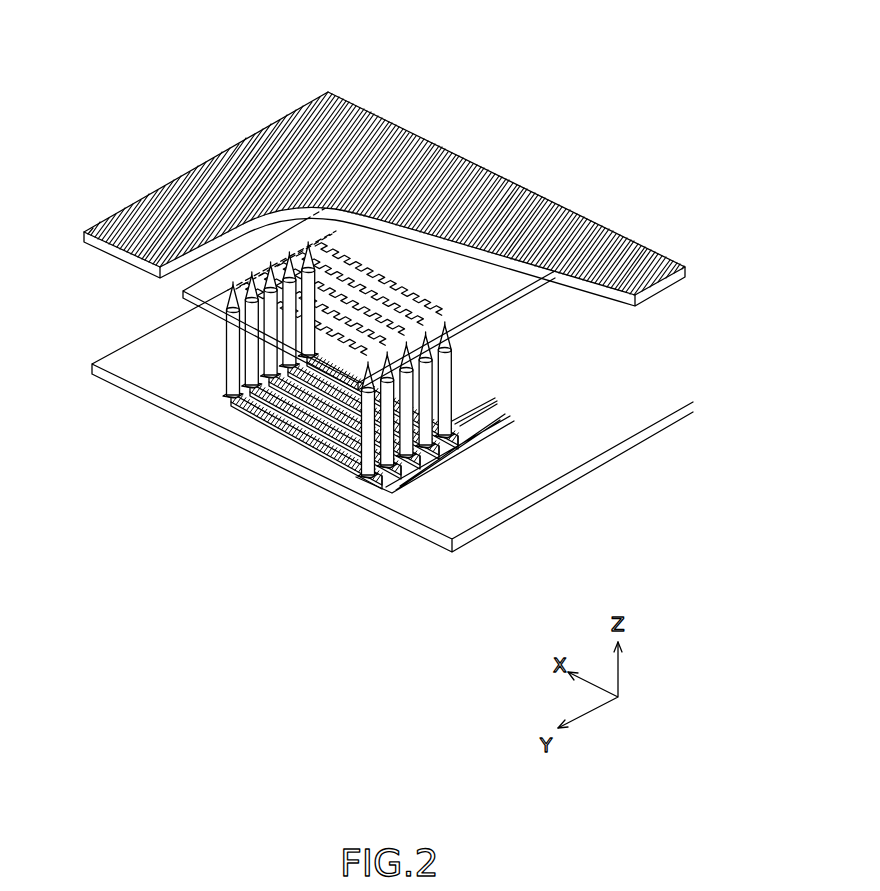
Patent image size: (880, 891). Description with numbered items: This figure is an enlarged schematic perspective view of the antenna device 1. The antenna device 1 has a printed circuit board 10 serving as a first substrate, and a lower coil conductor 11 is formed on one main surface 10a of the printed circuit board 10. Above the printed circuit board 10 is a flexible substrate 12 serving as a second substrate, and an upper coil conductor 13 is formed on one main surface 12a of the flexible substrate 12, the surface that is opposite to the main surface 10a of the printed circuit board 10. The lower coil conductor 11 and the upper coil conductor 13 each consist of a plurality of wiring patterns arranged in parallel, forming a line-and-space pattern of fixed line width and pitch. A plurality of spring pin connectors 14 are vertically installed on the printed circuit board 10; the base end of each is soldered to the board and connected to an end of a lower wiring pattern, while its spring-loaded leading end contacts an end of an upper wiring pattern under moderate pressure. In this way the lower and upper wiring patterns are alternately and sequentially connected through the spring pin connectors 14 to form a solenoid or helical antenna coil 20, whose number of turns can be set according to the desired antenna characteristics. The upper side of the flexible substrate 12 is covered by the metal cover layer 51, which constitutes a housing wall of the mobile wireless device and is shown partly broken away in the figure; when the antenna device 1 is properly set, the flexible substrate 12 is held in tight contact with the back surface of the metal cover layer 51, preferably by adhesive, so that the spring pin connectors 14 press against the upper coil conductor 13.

The antenna device 1 is at (586, 107).
The printed circuit board 10 is at (613, 452).
The one main surface 10a is at (505, 490).
The lower coil conductor 11 is at (307, 433).
The flexible substrate 12 is at (516, 294).
The one main surface 12a is at (479, 312).
The upper coil conductor 13 is at (423, 289).
The spring pin connectors 14 is at (224, 346).
The antenna coil 20 is at (374, 340).
The metal cover layer 51 is at (272, 152).